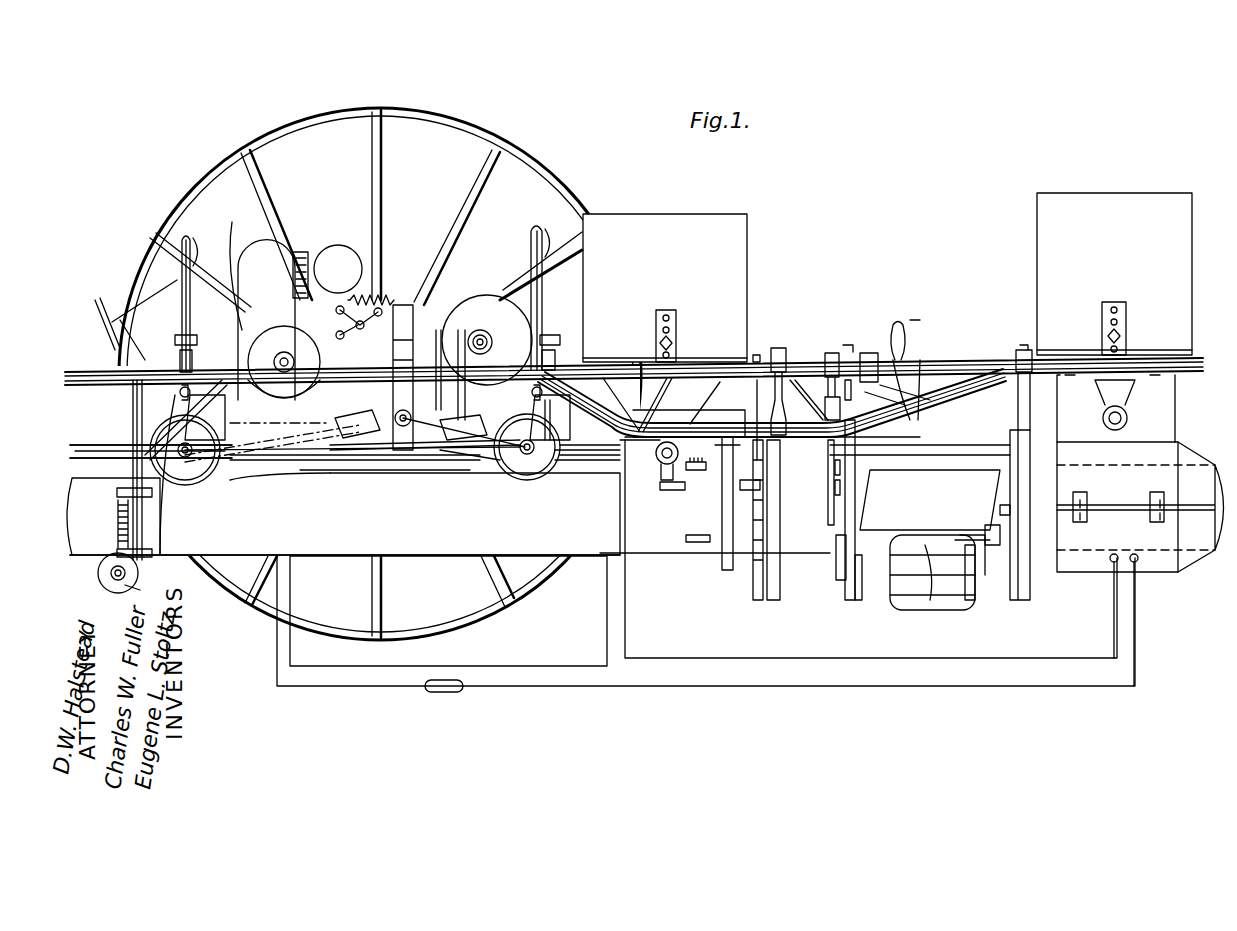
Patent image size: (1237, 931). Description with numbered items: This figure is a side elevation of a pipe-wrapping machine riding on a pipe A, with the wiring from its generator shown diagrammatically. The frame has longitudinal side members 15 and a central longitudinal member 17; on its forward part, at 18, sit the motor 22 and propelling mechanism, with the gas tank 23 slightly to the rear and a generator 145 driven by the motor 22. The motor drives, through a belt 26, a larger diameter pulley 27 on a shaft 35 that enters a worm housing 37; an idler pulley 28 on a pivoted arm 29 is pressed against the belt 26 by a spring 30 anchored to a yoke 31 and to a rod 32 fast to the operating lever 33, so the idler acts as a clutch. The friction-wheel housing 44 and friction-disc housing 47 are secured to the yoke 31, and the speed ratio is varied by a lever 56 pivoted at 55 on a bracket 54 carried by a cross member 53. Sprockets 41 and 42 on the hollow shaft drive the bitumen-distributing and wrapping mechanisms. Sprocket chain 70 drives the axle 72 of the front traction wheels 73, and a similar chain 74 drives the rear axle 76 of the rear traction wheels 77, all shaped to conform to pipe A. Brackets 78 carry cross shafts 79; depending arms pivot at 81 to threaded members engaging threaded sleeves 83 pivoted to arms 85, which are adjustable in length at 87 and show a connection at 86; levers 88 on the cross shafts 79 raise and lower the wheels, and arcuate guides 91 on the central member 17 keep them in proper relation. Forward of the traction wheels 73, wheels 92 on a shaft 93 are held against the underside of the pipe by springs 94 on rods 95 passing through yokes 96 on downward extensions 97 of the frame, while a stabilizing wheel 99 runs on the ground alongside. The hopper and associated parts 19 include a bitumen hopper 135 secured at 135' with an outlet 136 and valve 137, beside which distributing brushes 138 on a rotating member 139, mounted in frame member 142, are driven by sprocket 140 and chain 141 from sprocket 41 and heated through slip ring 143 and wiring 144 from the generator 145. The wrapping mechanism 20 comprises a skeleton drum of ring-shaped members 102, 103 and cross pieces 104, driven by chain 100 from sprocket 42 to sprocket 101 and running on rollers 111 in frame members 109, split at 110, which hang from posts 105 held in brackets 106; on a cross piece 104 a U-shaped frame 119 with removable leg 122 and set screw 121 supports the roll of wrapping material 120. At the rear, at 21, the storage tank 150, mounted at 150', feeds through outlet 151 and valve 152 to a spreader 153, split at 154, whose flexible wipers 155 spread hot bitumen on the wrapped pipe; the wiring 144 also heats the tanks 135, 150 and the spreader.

The wheel 99 is at (455, 122).
The levers 88 is at (546, 252).
The generator 145 is at (218, 259).
The motor 22 is at (266, 250).
The motor and propelling mechanism 18 is at (311, 248).
The yoke 31 is at (405, 320).
The gas tank 23 is at (362, 268).
The spring 30 is at (383, 300).
The shaft 35 is at (482, 295).
The belt 26 is at (445, 322).
The pulley 27 is at (492, 342).
The hopper and its associated parts 19 is at (655, 213).
The tank or hopper 135 is at (694, 289).
The adjustable securing point of hopper 135' is at (693, 335).
The sprocket 41 is at (760, 352).
The longitudinal side members 15 is at (804, 364).
The posts 105 is at (1040, 350).
The brackets 106 is at (1017, 352).
The sprocket 42 is at (870, 355).
The cross member 53 is at (904, 325).
The lever 56 is at (918, 324).
The wrapping mechanism 20 is at (926, 371).
The storage tank 150 is at (1080, 281).
The means for coating the wrapped pipe 21 is at (1114, 261).
The adjustable mounting of storage tank 150' is at (1145, 326).
The valve 152 is at (1160, 412).
The outlet 151 is at (1160, 437).
The spreader 153 is at (1161, 571).
The split 154 is at (1118, 521).
The flexible brushes or wipers 155 is at (1143, 577).
The frame members 109 is at (766, 540).
The ring-shaped member 103 is at (1021, 581).
The cross pieces 104 is at (936, 451).
The leg 122 is at (986, 540).
The frame 119 is at (929, 624).
The roll of wrapping material 120 is at (950, 600).
The set screw 121 is at (931, 556).
The split 110 is at (991, 531).
The ring-shaped member 102 is at (840, 555).
The sprocket 101 is at (862, 590).
The rollers 111 is at (845, 600).
The frame member 142 is at (773, 600).
The sprocket 140 is at (766, 560).
The rotating member 139 is at (761, 560).
The slip ring 143 is at (713, 556).
The outlet 136 is at (661, 468).
The distributing brushes 138 is at (696, 470).
The valve 137 is at (673, 500).
The sprocket chain 141 is at (757, 400).
The wiring 144 is at (681, 672).
The sprocket chain 100 is at (772, 407).
The bracket 54 is at (906, 378).
The pivot 55 is at (880, 392).
The operating lever 33 is at (105, 310).
The rod 32 is at (150, 340).
The cross shaft 79 is at (562, 348).
The brackets 78 is at (562, 360).
The pivot 81 is at (541, 392).
The arcuate guides 91 is at (521, 406).
The threaded sleeves 83 is at (565, 425).
The downward extensions of the frame 97 is at (120, 470).
The rods 95 is at (117, 492).
The springs 94 is at (118, 527).
The wheels 92 is at (106, 578).
The yokes or guides 96 is at (150, 560).
The shaft 93 is at (140, 588).
The pipe A is at (216, 570).
The axle 72 is at (177, 485).
The front traction wheels 73 is at (201, 480).
The arms 85 is at (425, 496).
The sprocket chain 70 is at (296, 445).
The housing 47 is at (346, 430).
The means for adjusting arm length 87 is at (414, 492).
The pivot 86 is at (401, 426).
The housing 44 is at (441, 440).
The central longitudinal member 17 is at (471, 440).
The chain 74 is at (478, 470).
The housing 37 is at (481, 455).
The axle 76 is at (521, 475).
The rear traction wheels 77 is at (561, 470).
The pivoted arm 29 is at (292, 315).
The idler pulley 28 is at (359, 334).